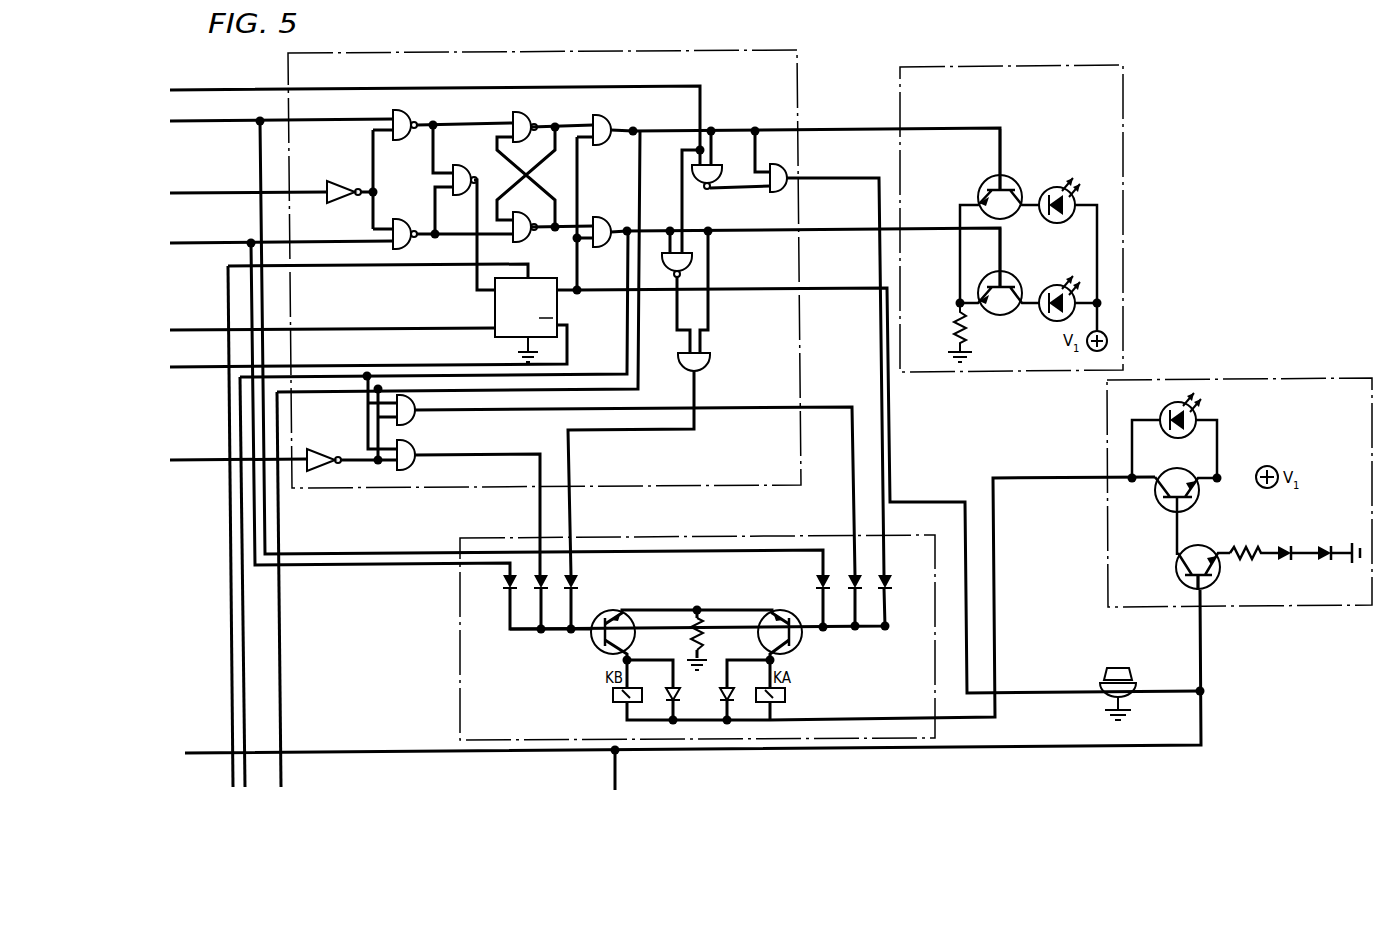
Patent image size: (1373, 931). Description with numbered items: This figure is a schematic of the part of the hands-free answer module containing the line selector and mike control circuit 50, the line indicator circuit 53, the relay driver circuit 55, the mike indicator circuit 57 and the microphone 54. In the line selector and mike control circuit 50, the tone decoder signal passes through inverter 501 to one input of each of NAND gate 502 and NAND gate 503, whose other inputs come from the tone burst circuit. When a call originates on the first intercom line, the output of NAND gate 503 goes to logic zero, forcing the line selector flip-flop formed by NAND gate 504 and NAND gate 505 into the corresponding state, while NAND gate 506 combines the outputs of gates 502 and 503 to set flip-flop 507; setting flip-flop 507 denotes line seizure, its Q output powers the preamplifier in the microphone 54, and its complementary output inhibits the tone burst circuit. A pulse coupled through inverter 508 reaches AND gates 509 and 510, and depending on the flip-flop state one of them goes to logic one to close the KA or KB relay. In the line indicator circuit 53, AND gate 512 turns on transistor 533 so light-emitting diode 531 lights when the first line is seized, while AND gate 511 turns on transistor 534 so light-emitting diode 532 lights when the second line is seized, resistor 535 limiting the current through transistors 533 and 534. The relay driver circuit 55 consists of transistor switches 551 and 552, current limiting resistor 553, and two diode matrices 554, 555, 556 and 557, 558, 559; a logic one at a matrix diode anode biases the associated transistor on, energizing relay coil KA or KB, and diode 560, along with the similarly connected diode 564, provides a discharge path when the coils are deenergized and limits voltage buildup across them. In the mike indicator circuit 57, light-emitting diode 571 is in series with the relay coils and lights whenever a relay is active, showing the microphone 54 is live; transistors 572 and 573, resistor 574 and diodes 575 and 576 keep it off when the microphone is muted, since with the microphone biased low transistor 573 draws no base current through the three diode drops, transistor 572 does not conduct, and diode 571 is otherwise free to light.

The line selector and mike control circuit 50 is at (705, 76).
The inverter 501 is at (340, 183).
The NAND gate 502 is at (400, 223).
The NAND gate 503 is at (400, 114).
The NAND gate 504 is at (521, 116).
The NAND gate 505 is at (523, 216).
The NAND gate 506 is at (460, 169).
The flip-flop 507 is at (495, 303).
The inverter 508 is at (316, 453).
The AND gate 509 is at (417, 406).
The AND gate 510 is at (417, 451).
The AND gate 511 is at (599, 220).
The AND gate 512 is at (598, 118).
The line indicator circuit 53 is at (1098, 101).
The light-emitting diode 531 is at (1063, 232).
The light-emitting diode 532 is at (1063, 295).
The transistor 533 is at (997, 216).
The transistor 534 is at (1000, 271).
The resistor 535 is at (946, 332).
The microphone 54 is at (1118, 683).
The relay driver circuit 55 is at (610, 717).
The transistor switch 551 is at (613, 621).
The transistor switch 552 is at (780, 621).
The current limiting resistor 553 is at (710, 644).
The matrix diode 554 is at (880, 582).
The matrix diode 555 is at (820, 575).
The matrix diode 556 is at (850, 582).
The matrix diode 557 is at (507, 588).
The matrix diode 558 is at (538, 588).
The matrix diode 559 is at (568, 588).
The diode 560 is at (738, 694).
The diode 564 is at (662, 694).
The mike indicator circuit 57 is at (1365, 410).
The light-emitting diode 571 is at (1166, 408).
The transistor 572 is at (1186, 503).
The transistor 573 is at (1182, 581).
The resistor 574 is at (1254, 541).
The diode 575 is at (1294, 541).
The diode 576 is at (1335, 543).